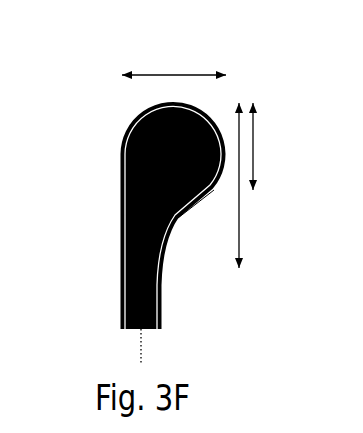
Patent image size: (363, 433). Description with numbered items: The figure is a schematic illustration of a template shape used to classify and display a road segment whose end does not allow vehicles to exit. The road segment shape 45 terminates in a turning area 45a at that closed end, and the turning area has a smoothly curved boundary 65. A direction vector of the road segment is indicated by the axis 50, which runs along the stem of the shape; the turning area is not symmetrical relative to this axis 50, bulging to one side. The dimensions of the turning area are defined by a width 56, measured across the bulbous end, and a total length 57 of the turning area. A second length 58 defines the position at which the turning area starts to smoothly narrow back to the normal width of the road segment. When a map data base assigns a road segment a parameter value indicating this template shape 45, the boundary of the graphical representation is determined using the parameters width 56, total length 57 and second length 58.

The road segment shape 45 is at (93, 110).
The turning area 45a is at (122, 192).
The smoothly curved boundary 65 is at (191, 211).
The direction vector 50 is at (141, 347).
The width 56 is at (170, 75).
The total length 57 is at (239, 215).
The second length 58 is at (253, 138).